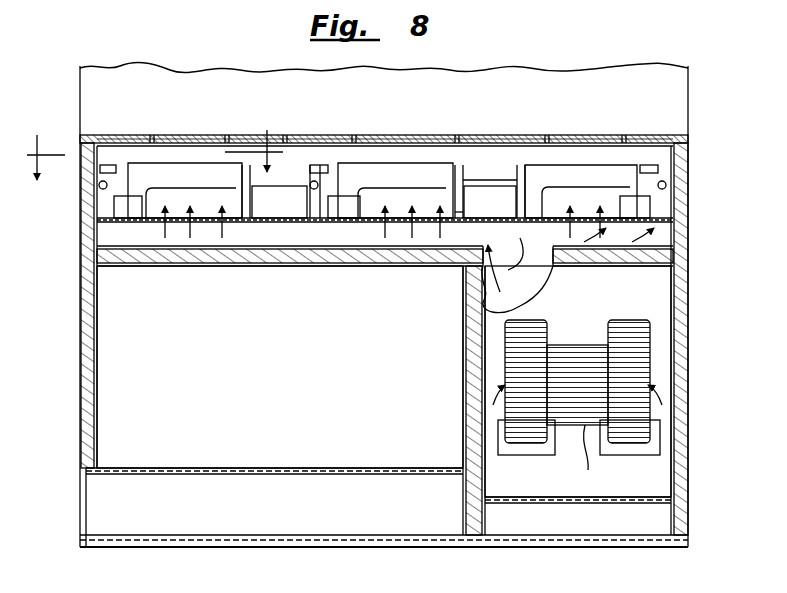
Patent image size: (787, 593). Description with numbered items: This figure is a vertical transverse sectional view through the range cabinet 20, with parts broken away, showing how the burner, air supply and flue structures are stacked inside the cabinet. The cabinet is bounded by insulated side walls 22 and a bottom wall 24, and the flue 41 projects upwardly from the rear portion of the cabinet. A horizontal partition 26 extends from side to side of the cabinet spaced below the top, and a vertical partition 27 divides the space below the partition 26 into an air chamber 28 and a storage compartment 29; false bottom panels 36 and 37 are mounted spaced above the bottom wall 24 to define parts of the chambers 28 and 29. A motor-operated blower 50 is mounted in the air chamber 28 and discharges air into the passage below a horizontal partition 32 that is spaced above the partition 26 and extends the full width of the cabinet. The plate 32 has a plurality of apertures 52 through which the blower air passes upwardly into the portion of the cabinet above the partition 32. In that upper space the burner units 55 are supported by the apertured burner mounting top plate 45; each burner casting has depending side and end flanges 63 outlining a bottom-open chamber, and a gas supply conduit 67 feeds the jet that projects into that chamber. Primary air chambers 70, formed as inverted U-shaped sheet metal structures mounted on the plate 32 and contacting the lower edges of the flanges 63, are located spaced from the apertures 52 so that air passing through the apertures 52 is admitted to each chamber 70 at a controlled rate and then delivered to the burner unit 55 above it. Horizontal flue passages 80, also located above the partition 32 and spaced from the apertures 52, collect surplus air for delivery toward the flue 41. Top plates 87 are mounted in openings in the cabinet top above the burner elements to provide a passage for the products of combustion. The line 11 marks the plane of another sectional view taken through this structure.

The section line 11 is at (153, 143).
The range cabinet 20 is at (78, 415).
The side walls 22 is at (86, 362).
The bottom wall 24 is at (283, 548).
The horizontal partition 26 is at (146, 266).
The vertical partition 27 is at (466, 381).
The air chamber 28 is at (652, 484).
The storage compartment 29 is at (322, 432).
The horizontal partition 32 is at (517, 272).
The false bottom panel 36 is at (540, 506).
The false bottom panel 37 is at (378, 474).
The flue 41 is at (686, 90).
The apertured top plate 45 is at (506, 188).
The motor-operated blower 50 is at (572, 356).
The apertures 52 is at (400, 230).
The burner unit 55 is at (180, 170).
The depending side and end flanges 63 is at (130, 180).
The gas supply conduit 67 is at (100, 193).
The primary air chamber 70 is at (698, 208).
The horizontal flue passage 80 is at (285, 224).
The top plate 87 is at (455, 136).